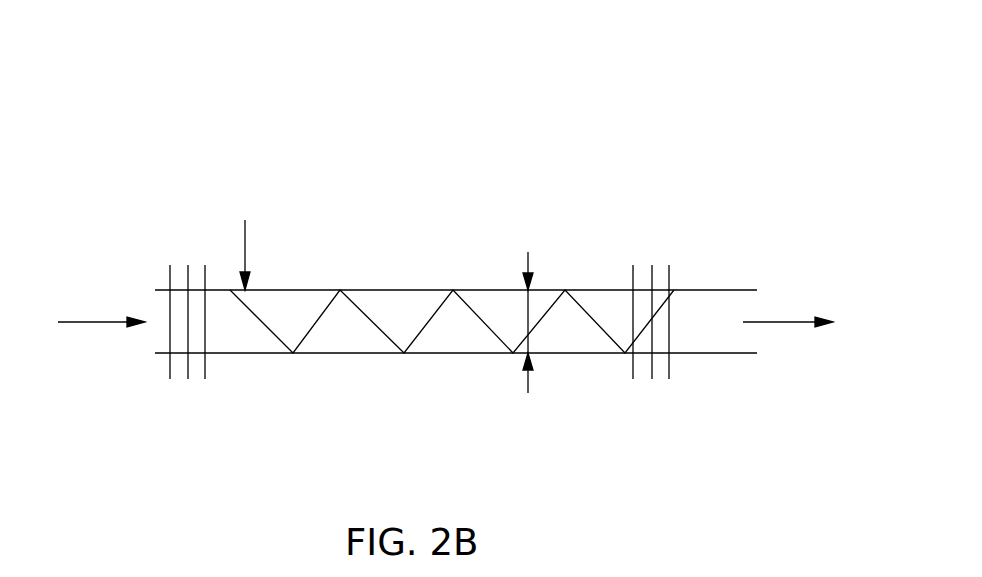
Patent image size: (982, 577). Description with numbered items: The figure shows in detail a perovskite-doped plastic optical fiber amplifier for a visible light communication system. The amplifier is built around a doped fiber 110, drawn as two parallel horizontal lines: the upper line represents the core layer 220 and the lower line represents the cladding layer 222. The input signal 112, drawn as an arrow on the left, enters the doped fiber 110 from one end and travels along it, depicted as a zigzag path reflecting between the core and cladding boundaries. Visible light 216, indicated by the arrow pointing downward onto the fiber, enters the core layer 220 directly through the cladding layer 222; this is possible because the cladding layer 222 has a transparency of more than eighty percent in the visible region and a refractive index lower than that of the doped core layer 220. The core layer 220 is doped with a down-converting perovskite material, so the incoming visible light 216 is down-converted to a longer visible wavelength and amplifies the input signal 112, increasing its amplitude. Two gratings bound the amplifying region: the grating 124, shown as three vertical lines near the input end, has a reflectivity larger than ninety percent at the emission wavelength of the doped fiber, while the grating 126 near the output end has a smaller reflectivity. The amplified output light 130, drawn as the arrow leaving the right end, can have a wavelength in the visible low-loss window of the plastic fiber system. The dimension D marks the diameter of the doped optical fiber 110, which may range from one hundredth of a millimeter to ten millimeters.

The doped fiber 110 is at (482, 286).
The input signal 112 is at (97, 321).
The grating 124 is at (187, 385).
The grating 126 is at (652, 385).
The amplified output light 130 is at (786, 320).
The visible light 216 is at (245, 243).
The core layer 220 is at (403, 312).
The cladding layer 222 is at (600, 289).
The diameter D is at (527, 387).